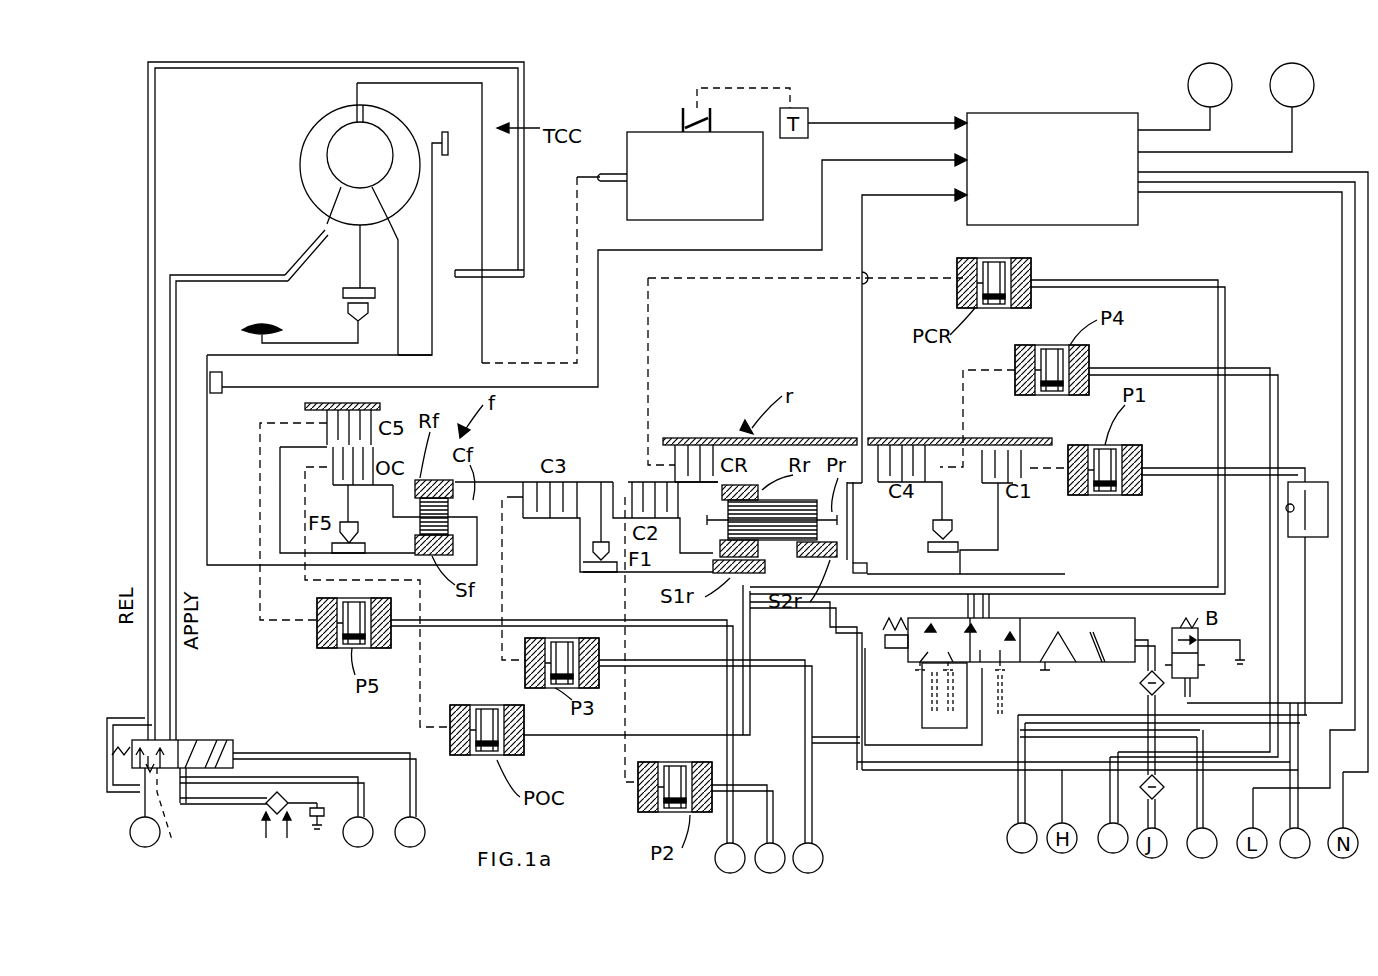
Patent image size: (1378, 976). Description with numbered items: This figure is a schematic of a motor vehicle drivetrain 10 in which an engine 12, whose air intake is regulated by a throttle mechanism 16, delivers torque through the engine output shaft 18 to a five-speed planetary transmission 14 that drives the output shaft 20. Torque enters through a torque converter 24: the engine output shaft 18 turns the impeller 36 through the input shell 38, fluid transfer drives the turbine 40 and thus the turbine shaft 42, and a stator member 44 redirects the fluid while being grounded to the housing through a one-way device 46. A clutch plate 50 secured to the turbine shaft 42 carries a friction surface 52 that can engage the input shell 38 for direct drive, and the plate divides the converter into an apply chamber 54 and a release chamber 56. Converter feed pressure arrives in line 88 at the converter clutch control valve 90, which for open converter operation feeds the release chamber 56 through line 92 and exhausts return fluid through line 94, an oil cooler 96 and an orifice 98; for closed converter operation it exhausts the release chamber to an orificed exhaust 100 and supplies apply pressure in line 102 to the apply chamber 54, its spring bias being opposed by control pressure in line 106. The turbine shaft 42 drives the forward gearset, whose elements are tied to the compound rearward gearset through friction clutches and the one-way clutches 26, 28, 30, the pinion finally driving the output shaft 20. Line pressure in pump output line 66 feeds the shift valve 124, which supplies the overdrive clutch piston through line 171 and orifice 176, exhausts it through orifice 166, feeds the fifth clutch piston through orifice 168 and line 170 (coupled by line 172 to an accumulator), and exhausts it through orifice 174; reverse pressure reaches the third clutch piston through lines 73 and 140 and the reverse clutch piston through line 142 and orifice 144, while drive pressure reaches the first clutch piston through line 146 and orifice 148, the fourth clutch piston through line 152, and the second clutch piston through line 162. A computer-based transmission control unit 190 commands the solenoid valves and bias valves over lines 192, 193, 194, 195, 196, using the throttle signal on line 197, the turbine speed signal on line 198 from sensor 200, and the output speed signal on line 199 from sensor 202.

The motor vehicle drivetrain 10 is at (840, 100).
The engine 12 is at (627, 152).
The planetary transmission 14 is at (660, 418).
The throttle mechanism 16 is at (683, 120).
The engine output shaft 18 is at (606, 183).
The output shaft 20 is at (1060, 572).
The torque converter 24 is at (355, 219).
The one-way clutch 26 is at (340, 555).
The one-way clutch 28 is at (598, 573).
The one-way clutch 30 is at (928, 545).
The impeller 36 is at (302, 172).
The input shell 38 is at (490, 112).
The turbine 40 is at (398, 128).
The turbine shaft 42 is at (217, 352).
The stator member 44 is at (330, 205).
The one-way device 46 is at (348, 312).
The clutch plate 50 is at (435, 190).
The friction surface 52 is at (455, 135).
The apply chamber 54 is at (412, 265).
The release chamber 56 is at (463, 248).
The pump output line 66 is at (1208, 820).
The line 73 is at (815, 810).
The converter feed line 88 is at (130, 828).
The TCC Control Valve 90 is at (160, 740).
The release line 92 is at (146, 570).
The return line 94 is at (180, 555).
The oil cooler 96 is at (265, 815).
The orifice 98 is at (325, 828).
The orificed exhaust 100 is at (177, 819).
The TCC apply line 102 is at (308, 777).
The control pressure line 106 is at (418, 785).
The Shift Valve 124 is at (1102, 618).
The line 140 is at (798, 680).
The line 142 is at (910, 765).
The orifice 144 is at (1047, 664).
The line 146 is at (1012, 812).
The orifice 148 is at (1318, 490).
The line 152 is at (1108, 800).
The line 162 is at (768, 788).
The orifice 166 is at (1000, 678).
The orifice 168 is at (920, 668).
The line 170 is at (818, 632).
The line 171 is at (740, 612).
The line 172 is at (728, 676).
The orifice 174 is at (945, 672).
The orifice 176 is at (1020, 698).
The Transmission Control Unit 190 is at (1090, 225).
The control line 192 is at (1290, 172).
The control line 193 is at (1282, 194).
The control line 194 is at (1248, 185).
The control line 195 is at (1238, 152).
The control line 196 is at (1168, 128).
The throttle signal line 197 is at (882, 123).
The turbine speed signal line 198 is at (822, 190).
The output speed signal line 199 is at (878, 210).
The turbine speed sensor 200 is at (222, 395).
The output speed sensor 202 is at (880, 568).